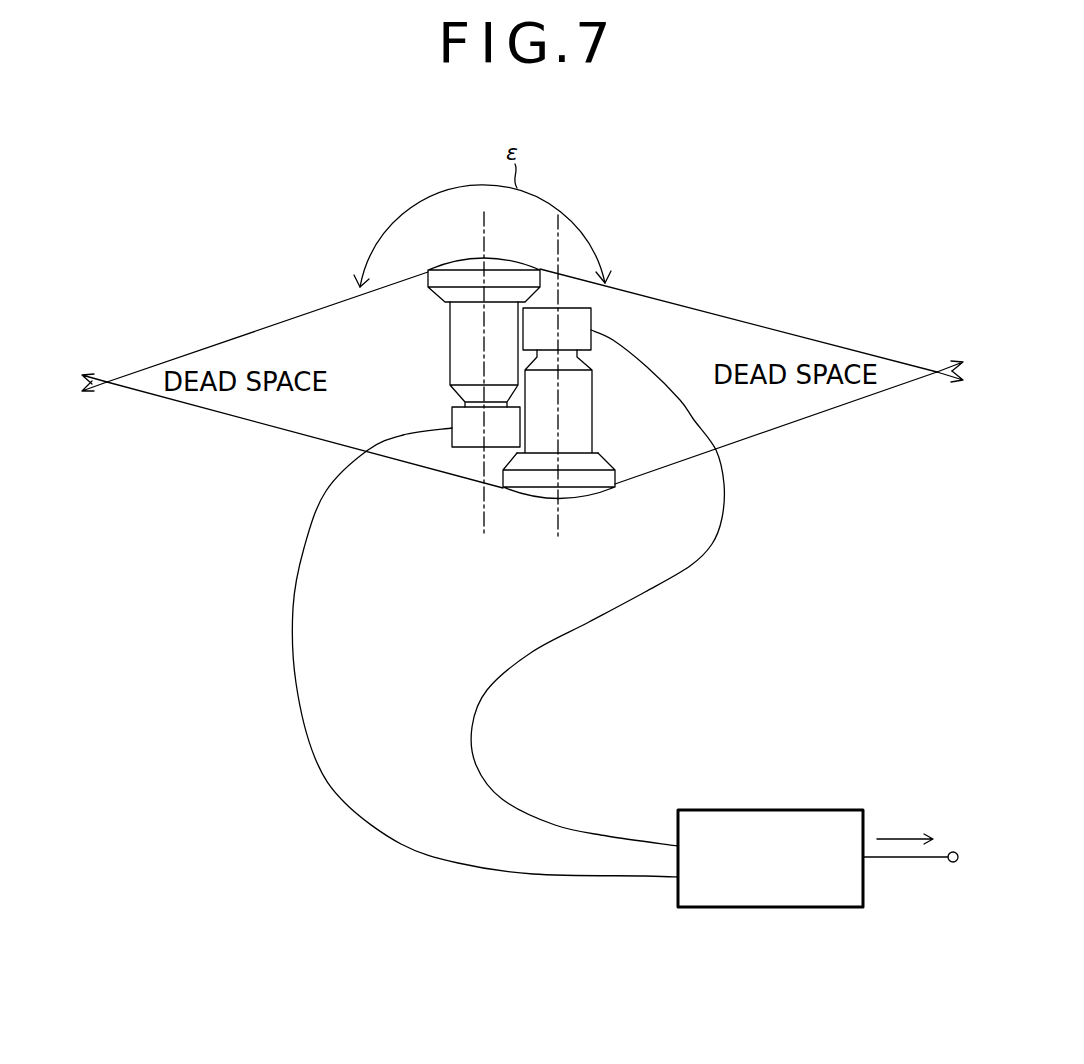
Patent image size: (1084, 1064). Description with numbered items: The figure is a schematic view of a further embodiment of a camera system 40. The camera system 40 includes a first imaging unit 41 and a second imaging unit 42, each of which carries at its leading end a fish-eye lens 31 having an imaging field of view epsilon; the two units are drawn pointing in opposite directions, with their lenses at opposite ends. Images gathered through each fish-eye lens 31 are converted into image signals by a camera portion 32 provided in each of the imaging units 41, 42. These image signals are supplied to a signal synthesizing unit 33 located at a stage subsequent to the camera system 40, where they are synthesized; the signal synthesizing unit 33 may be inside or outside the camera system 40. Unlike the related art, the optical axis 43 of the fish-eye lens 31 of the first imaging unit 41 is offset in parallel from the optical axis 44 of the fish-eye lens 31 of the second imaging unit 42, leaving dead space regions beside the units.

The fish-eye lens 31 is at (460, 260).
The camera portion 32 is at (452, 419).
The signal synthesizing unit 33 is at (765, 810).
The camera system 40 is at (682, 626).
The first imaging unit 41 is at (450, 341).
The second imaging unit 42 is at (647, 427).
The optical axis 43 is at (484, 517).
The optical axis 44 is at (560, 515).